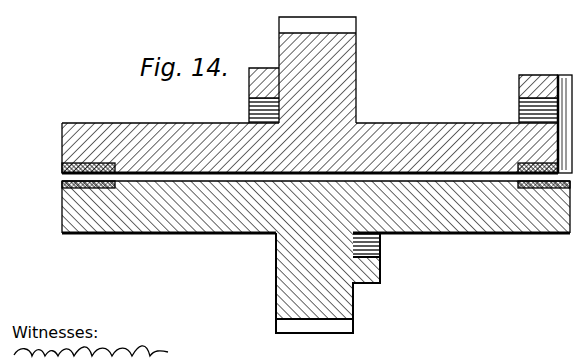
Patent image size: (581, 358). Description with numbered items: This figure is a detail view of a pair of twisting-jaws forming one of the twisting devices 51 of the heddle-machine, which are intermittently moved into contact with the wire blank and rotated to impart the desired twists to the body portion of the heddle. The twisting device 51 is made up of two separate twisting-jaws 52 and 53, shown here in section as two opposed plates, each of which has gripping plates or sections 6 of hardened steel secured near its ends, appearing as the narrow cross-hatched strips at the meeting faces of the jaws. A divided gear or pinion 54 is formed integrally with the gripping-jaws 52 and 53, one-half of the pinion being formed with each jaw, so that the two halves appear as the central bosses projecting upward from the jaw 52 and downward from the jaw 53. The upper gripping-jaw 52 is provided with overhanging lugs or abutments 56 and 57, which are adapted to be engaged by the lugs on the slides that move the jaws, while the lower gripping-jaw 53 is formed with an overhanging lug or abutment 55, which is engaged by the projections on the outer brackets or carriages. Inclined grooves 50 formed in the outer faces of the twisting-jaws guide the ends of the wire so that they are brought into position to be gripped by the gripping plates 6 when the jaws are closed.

The gasket 6 is at (75, 166).
The inclined groove 50 is at (566, 80).
The twisting device 51 is at (316, 221).
The twisting-jaw 52 is at (375, 132).
The twisting-jaw 53 is at (503, 224).
The divided gear or pinion 54 is at (340, 78).
The overhanging lug or abutment 55 is at (370, 278).
The overhanging lug or abutment 56 is at (262, 78).
The overhanging lug or abutment 57 is at (526, 78).